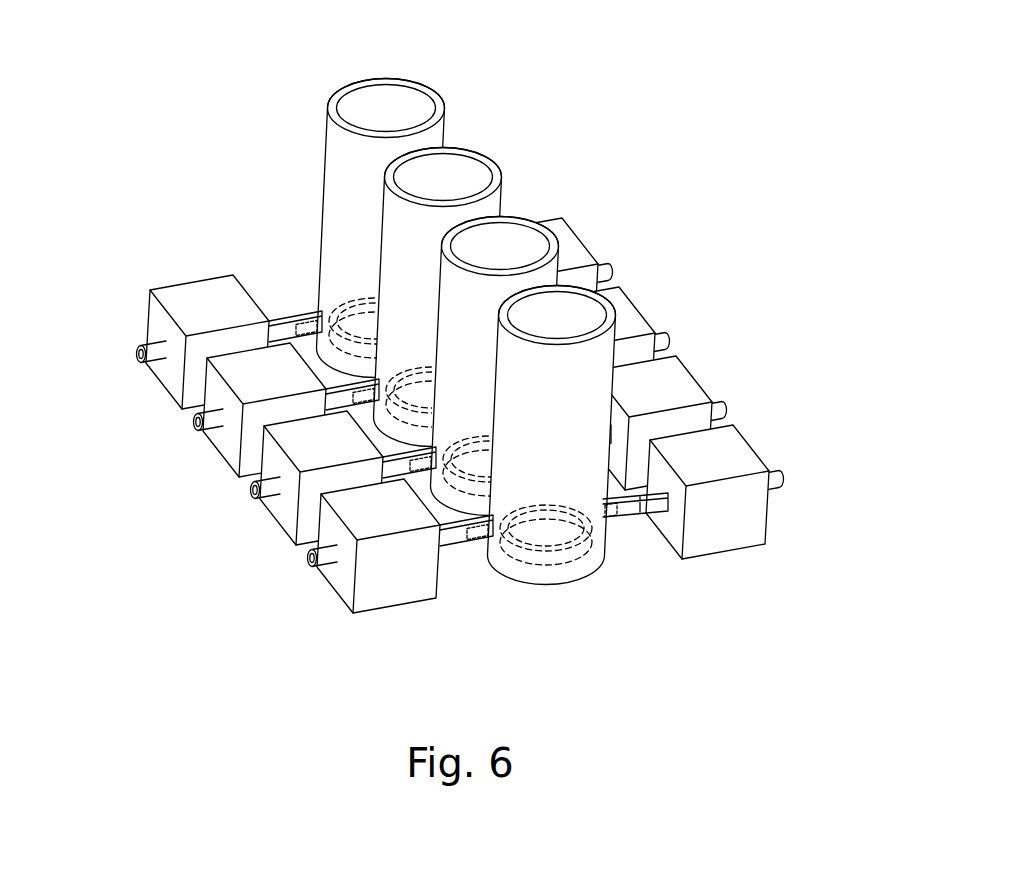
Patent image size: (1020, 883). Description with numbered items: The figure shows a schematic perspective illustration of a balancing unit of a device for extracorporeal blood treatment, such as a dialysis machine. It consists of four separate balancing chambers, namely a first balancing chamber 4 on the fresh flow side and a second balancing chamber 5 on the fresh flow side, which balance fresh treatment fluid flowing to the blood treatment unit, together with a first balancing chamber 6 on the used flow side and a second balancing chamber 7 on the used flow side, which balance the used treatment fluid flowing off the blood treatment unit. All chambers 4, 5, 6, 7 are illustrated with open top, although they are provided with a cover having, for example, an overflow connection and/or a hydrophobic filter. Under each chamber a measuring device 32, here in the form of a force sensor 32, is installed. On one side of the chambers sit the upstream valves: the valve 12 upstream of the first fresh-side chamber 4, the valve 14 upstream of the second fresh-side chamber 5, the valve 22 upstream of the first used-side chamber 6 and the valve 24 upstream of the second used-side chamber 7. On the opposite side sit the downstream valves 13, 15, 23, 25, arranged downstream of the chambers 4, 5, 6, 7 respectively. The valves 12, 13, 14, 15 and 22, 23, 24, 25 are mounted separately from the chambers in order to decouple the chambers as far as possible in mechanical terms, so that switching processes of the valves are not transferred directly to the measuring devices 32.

The first balancing chamber on the fresh flow side 4 is at (395, 105).
The second balancing chamber on the fresh flow side 5 is at (463, 177).
The first balancing chamber on the used flow side 6 is at (507, 237).
The second balancing chamber on the used flow side 7 is at (595, 313).
The valve 12 is at (175, 370).
The valve 14 is at (227, 435).
The valve 22 is at (283, 507).
The valve 24 is at (347, 580).
The valve 13 is at (570, 260).
The valve 15 is at (630, 325).
The valve 23 is at (667, 388).
The valve 25 is at (735, 530).
The measuring device 32 is at (365, 352).